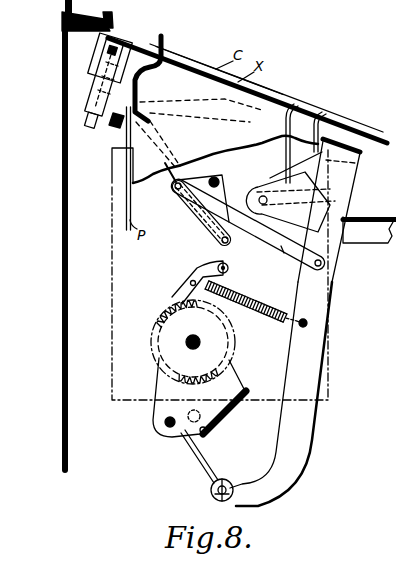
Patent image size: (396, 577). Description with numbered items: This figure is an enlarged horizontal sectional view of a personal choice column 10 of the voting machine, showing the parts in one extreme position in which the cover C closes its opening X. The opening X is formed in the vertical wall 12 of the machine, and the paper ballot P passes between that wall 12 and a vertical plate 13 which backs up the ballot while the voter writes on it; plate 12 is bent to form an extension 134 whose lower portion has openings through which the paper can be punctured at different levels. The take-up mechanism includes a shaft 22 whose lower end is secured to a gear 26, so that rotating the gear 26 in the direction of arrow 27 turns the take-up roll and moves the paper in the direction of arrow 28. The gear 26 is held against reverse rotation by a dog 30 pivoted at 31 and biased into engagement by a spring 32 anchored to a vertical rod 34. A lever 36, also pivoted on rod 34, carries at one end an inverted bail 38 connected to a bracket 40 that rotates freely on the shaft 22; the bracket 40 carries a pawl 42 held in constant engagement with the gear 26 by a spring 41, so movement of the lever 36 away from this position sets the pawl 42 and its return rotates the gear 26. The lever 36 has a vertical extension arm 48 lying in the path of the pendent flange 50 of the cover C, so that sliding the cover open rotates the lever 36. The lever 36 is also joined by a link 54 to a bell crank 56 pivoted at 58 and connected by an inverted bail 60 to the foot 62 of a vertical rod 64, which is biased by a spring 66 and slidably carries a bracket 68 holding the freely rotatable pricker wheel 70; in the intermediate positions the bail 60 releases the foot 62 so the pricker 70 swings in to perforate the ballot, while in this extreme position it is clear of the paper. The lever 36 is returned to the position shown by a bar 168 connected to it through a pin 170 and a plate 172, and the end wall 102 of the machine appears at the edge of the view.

The personal choice column 10 is at (72, 77).
The vertical wall 12 is at (138, 47).
The vertical plate 13 is at (258, 112).
The shaft 22 is at (190, 349).
The gear 26 is at (160, 316).
The arrow 27 is at (176, 342).
The arrow 28 is at (117, 193).
The dog 30 is at (181, 280).
The pivot 31 is at (229, 267).
The spring 32 is at (252, 295).
The vertical rod 34 is at (307, 321).
The lever 36 is at (306, 433).
The inverted bail 38 is at (193, 462).
The bracket 40 is at (158, 408).
The spring 41 is at (204, 432).
The pawl 42 is at (220, 404).
The vertical extension arm 48 is at (338, 134).
The pendent flange 50 is at (315, 112).
The link 54 is at (283, 251).
The bell crank 56 is at (197, 221).
The pivot 58 is at (227, 178).
The inverted bail 60 is at (170, 138).
The foot 62 is at (106, 120).
The vertical rod 64 is at (115, 50).
The spring 66 is at (116, 138).
The bracket 68 is at (86, 106).
The pricker wheel 70 is at (92, 78).
The end wall 102 is at (395, 52).
The extension 134 is at (140, 91).
The bar 168 is at (372, 233).
The pin 170 is at (268, 202).
The plate 172 is at (305, 188).